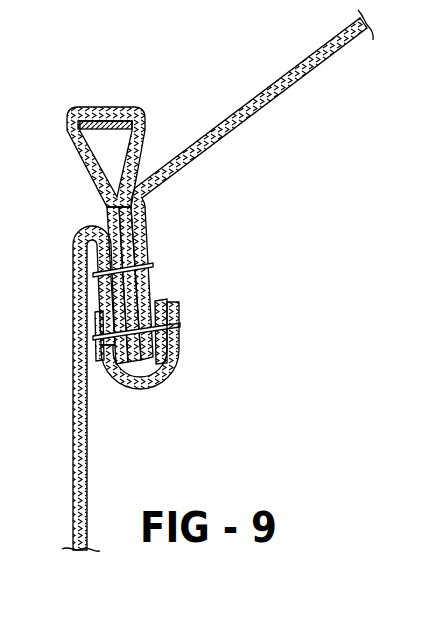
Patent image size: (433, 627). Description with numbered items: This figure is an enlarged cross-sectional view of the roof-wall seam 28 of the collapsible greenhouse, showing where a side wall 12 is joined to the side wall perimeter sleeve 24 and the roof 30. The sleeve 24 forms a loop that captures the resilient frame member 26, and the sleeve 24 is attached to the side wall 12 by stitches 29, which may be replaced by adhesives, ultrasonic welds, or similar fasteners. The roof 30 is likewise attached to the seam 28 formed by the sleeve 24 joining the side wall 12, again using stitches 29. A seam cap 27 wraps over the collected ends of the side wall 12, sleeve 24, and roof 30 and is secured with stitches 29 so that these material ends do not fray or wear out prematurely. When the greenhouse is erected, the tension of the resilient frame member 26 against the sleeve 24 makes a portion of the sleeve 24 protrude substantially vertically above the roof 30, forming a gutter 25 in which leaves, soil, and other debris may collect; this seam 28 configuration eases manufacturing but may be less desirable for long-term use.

The side wall 12 is at (73, 379).
The side wall perimeter sleeve 24 is at (73, 158).
The gutter 25 is at (156, 146).
The resilient frame member 26 is at (91, 121).
The seam cap 27 is at (157, 389).
The seam 28 is at (198, 266).
The stitches 29 is at (152, 267).
The roof 30 is at (251, 101).